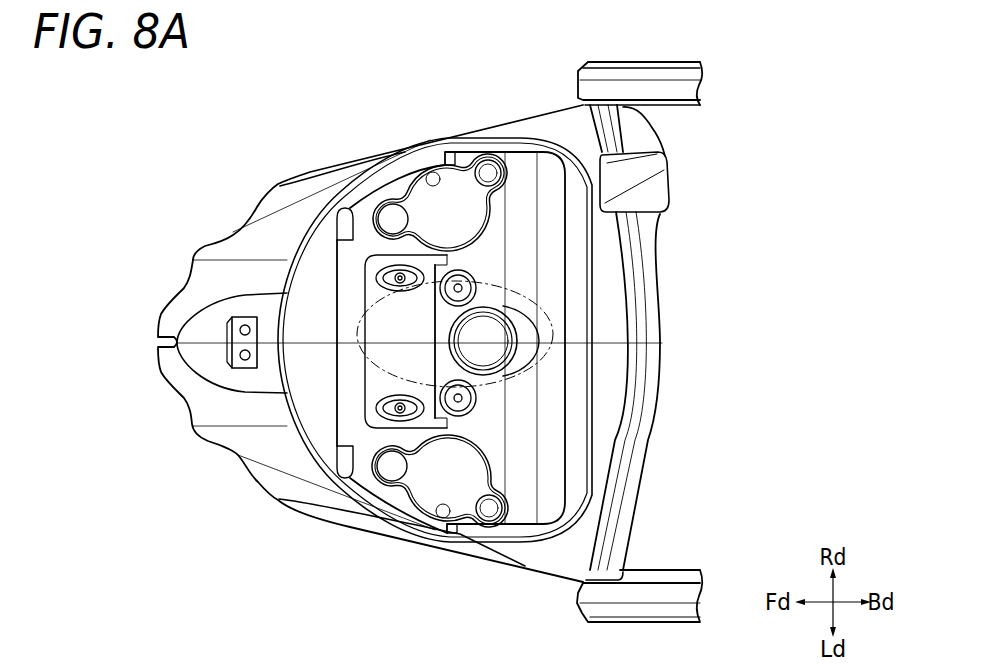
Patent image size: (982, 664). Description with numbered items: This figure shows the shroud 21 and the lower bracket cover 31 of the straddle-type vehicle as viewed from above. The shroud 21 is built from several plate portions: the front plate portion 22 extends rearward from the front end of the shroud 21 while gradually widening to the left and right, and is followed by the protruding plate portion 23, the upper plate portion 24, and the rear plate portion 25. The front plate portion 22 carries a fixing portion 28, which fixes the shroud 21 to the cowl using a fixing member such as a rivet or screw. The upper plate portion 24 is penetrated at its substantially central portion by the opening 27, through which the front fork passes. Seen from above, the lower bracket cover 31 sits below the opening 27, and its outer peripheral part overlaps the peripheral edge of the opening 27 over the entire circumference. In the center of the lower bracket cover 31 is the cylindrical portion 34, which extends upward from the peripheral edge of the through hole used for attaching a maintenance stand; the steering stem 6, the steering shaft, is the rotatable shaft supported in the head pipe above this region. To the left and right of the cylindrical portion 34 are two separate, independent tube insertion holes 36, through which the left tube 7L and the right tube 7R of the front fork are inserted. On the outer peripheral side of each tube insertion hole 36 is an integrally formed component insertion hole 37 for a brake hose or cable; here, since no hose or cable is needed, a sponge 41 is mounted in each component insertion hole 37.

The shroud 21 is at (273, 176).
The front plate portion 22 is at (228, 286).
The protruding plate portion 23 is at (293, 433).
The upper plate portion 24 is at (316, 260).
The rear plate portion 25 is at (612, 337).
The opening 27 is at (344, 207).
The fixing portion 28 is at (228, 347).
The lower bracket cover 31 is at (554, 176).
The cylindrical portion 34 is at (520, 358).
The tube insertion hole 36 is at (433, 178).
The component insertion hole 37 is at (490, 168).
The sponge 41 is at (393, 217).
The steering stem 6 is at (487, 316).
The right tube 7R is at (505, 192).
The left tube 7L is at (480, 447).